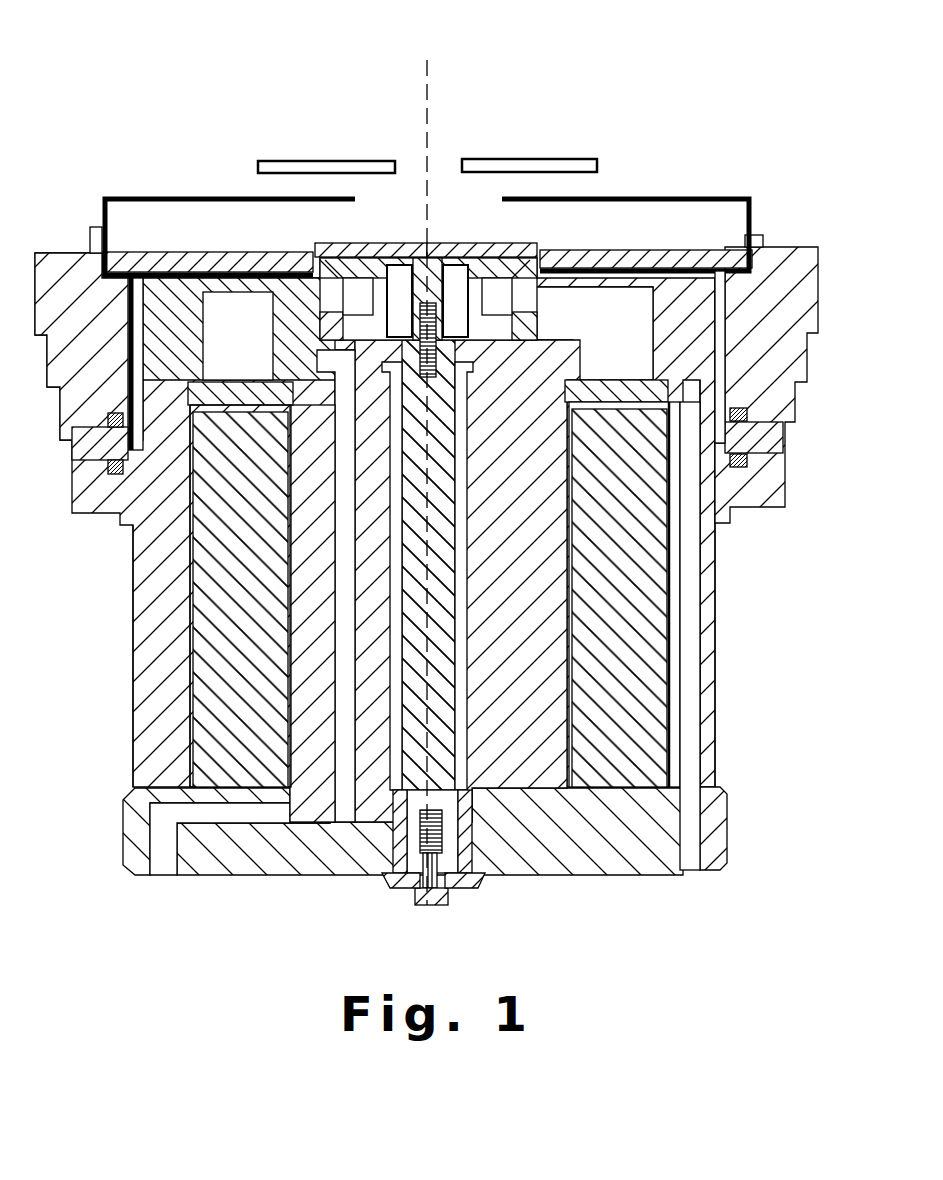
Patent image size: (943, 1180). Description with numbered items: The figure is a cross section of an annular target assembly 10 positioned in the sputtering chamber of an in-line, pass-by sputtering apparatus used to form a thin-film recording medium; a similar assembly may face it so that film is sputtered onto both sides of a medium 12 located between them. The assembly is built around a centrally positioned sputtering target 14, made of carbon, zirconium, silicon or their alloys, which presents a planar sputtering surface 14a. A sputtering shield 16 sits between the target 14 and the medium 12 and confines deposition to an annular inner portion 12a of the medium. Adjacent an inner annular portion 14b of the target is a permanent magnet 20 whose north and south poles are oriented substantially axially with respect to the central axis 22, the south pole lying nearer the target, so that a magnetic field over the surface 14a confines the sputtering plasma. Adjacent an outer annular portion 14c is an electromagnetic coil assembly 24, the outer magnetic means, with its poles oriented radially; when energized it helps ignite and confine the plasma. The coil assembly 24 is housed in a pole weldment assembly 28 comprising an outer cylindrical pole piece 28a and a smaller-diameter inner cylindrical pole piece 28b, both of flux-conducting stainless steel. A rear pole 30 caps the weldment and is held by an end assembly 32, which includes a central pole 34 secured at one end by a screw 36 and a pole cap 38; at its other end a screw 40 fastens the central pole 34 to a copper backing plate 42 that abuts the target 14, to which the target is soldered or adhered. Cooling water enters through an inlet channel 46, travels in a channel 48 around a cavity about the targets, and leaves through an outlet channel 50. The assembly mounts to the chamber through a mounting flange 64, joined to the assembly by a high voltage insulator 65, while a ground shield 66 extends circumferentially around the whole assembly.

The target assembly 10 is at (573, 68).
The medium 12 is at (326, 139).
The annular inner portion of medium 12a is at (365, 168).
The sputtering target 14 is at (456, 189).
The planar sputtering surface 14a is at (448, 247).
The inner annular portion of target 14b is at (412, 250).
The outer annular portion of target 14c is at (323, 258).
The sputtering shield 16 is at (165, 196).
The permanent magnet 20 is at (450, 297).
The axis 22 is at (425, 88).
The electromagnetic coil assembly 24 is at (255, 499).
The pole weldment assembly 28 is at (150, 565).
The outer cylindrical pole piece 28a is at (182, 693).
The inner cylindrical pole piece 28b is at (331, 703).
The rear pole 30 is at (268, 877).
The end assembly 32 is at (474, 891).
The central pole 34 is at (432, 800).
The screw 36 is at (440, 906).
The pole cap 38 is at (387, 890).
The screw 40 is at (430, 352).
The backing plate 42 is at (380, 262).
The inlet channel 46 is at (163, 865).
The channel 48 is at (688, 575).
The outlet channel 50 is at (697, 858).
The mounting flange 64 is at (786, 334).
The high voltage insulator 65 is at (760, 445).
The ground shield 66 is at (730, 260).